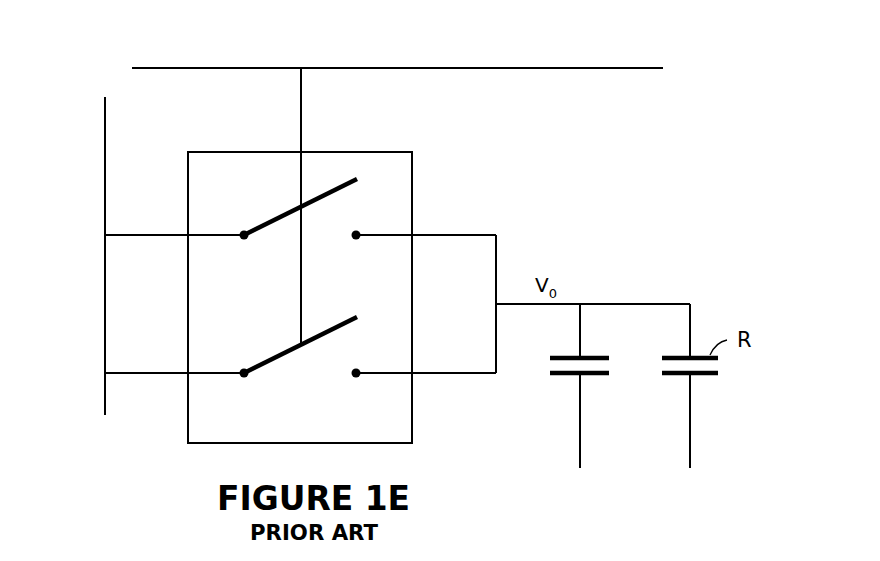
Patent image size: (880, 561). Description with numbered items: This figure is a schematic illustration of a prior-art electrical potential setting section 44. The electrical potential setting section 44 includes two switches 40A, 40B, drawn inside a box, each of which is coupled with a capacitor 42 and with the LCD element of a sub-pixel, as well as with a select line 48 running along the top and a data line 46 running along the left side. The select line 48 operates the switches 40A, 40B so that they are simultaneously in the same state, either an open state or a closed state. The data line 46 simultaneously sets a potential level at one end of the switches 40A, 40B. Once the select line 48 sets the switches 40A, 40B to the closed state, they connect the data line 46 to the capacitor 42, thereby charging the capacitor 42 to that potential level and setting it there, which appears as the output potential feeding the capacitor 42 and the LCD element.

The select line 48 is at (217, 68).
The data line 46 is at (105, 154).
The electrical potential setting section 44 is at (413, 177).
The switch 40A is at (262, 228).
The switch 40B is at (267, 353).
The capacitor 42 is at (593, 357).